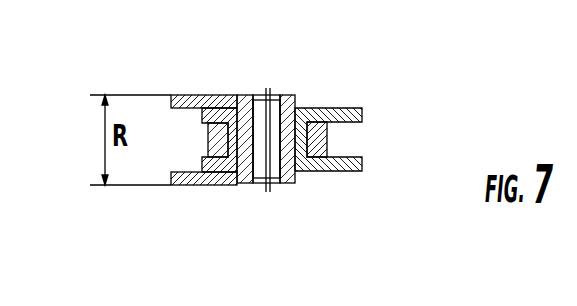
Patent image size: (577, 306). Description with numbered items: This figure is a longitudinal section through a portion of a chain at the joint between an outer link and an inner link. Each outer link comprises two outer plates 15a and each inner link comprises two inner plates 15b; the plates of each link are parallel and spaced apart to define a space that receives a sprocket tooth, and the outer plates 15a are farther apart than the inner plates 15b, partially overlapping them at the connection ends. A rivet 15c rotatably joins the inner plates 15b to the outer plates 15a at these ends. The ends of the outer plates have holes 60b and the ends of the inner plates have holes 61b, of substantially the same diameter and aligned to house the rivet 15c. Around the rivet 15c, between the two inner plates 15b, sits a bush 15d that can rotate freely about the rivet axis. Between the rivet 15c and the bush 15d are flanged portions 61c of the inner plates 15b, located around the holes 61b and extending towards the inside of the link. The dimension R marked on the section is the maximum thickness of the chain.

The outer plate 15a is at (188, 95).
The inner plate 15b is at (332, 112).
The rivet 15c is at (287, 185).
The bush 15d is at (313, 136).
The hole 60b is at (290, 95).
The hole 61b is at (289, 157).
The flanged portion 61c is at (237, 95).